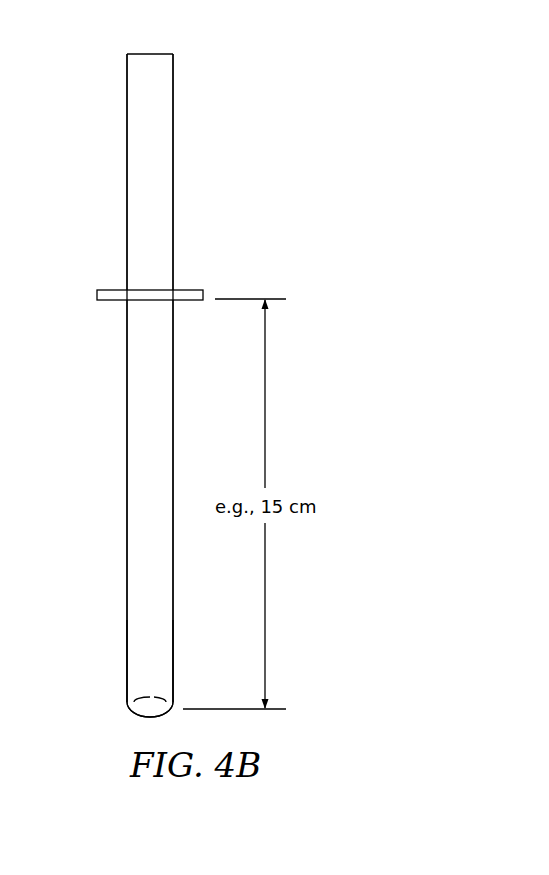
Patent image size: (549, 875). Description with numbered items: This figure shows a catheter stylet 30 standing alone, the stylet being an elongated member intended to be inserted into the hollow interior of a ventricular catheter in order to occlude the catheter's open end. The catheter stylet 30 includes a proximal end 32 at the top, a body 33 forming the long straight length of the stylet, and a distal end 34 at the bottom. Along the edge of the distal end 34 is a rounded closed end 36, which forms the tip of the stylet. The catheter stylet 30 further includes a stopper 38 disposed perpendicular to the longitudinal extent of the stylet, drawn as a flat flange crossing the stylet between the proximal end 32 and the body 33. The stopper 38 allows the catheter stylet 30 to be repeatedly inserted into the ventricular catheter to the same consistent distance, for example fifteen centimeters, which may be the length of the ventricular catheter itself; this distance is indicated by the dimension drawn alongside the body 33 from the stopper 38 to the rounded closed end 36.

The catheter stylet 30 is at (205, 101).
The proximal end 32 is at (116, 122).
The body 33 is at (127, 383).
The distal end 34 is at (114, 653).
The rounded closed end 36 is at (142, 717).
The stopper 38 is at (112, 290).